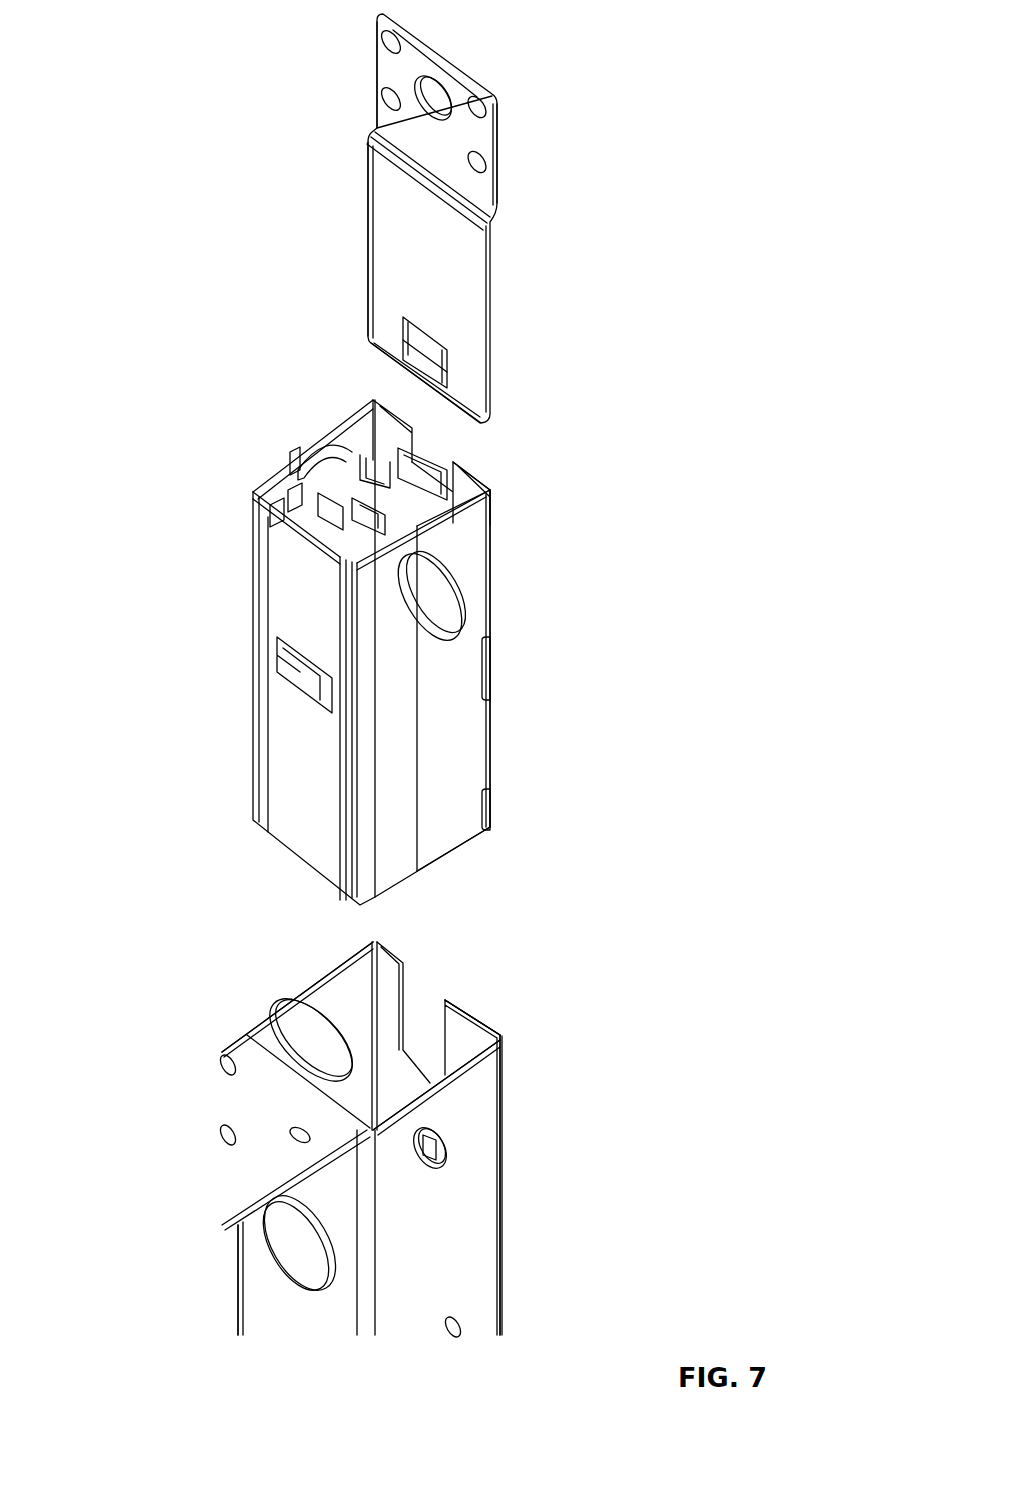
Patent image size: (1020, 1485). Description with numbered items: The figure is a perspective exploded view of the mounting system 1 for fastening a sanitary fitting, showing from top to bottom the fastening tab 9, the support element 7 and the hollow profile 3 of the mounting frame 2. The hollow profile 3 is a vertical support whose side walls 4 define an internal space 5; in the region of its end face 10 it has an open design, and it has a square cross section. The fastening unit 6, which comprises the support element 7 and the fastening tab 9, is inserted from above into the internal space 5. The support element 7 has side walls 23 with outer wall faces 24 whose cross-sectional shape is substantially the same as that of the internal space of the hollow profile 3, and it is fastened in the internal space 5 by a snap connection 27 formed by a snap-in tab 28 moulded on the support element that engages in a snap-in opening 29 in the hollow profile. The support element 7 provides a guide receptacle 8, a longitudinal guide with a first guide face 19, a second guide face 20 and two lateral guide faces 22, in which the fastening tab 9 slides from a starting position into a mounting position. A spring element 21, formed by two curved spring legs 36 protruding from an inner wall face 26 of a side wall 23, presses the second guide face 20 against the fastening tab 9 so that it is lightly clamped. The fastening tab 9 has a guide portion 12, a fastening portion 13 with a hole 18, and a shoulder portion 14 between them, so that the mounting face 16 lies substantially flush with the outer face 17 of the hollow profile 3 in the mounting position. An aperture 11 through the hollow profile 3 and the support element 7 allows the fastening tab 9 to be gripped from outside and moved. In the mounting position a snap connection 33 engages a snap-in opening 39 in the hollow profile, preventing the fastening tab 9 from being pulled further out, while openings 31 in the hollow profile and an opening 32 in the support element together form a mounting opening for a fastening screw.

The mounting system 1 is at (200, 180).
The mounting frame 2 is at (477, 1227).
The hollow profile 3 is at (487, 1080).
The side walls 4 is at (327, 970).
The internal space 5 is at (358, 1097).
The fastening unit 6 is at (492, 330).
The support element 7 is at (273, 778).
The guide receptacle 8 is at (463, 492).
The fastening tab 9 is at (387, 222).
The end face 10 is at (310, 992).
The aperture 11 is at (438, 463).
The guide portion 12 is at (383, 275).
The fastening portion 13 is at (470, 130).
The shoulder portion 14 is at (490, 220).
The mounting face 16 is at (497, 165).
The outer face 17 is at (478, 1012).
The mounting hole 18 is at (433, 91).
The first guide face 19 is at (390, 427).
The second guide face 20 is at (437, 458).
The spring element 21 is at (325, 495).
The lateral guide faces 22 is at (352, 433).
The side wall 23 is at (455, 750).
The outer wall faces 24 is at (293, 455).
The inner wall face 26 is at (443, 527).
The snap connection 27 is at (225, 969).
The snap-in tab 28 is at (298, 678).
The snap-in opening 29 is at (282, 1252).
The opening 31 is at (292, 1023).
The opening 32 is at (293, 497).
The snap connection 33 is at (536, 716).
The spring legs 36 is at (372, 512).
The snap-in opening 39 is at (418, 345).